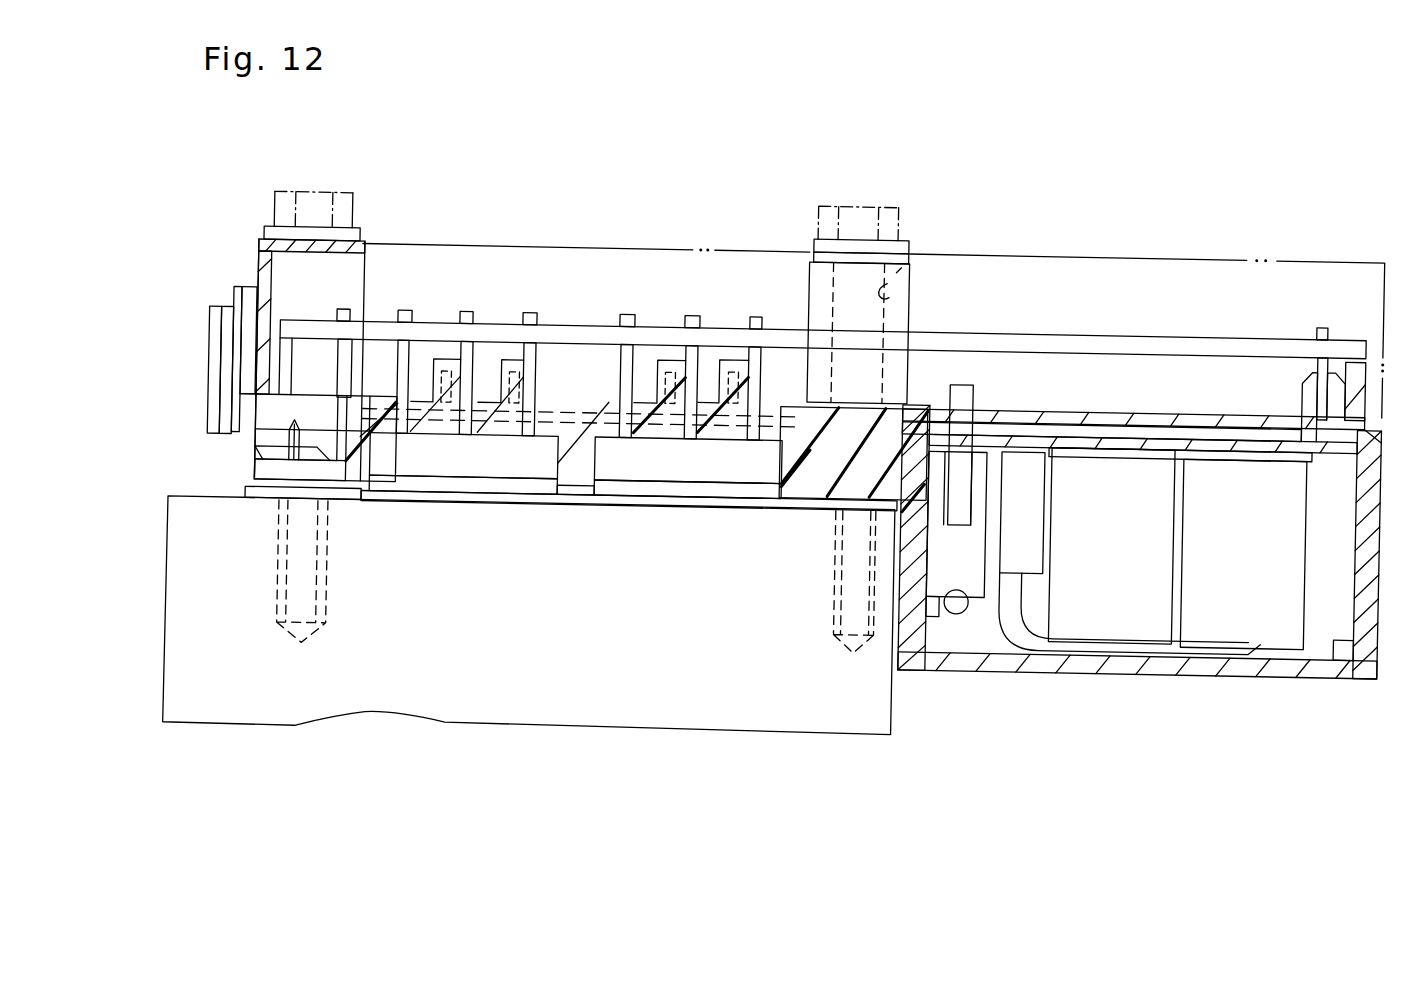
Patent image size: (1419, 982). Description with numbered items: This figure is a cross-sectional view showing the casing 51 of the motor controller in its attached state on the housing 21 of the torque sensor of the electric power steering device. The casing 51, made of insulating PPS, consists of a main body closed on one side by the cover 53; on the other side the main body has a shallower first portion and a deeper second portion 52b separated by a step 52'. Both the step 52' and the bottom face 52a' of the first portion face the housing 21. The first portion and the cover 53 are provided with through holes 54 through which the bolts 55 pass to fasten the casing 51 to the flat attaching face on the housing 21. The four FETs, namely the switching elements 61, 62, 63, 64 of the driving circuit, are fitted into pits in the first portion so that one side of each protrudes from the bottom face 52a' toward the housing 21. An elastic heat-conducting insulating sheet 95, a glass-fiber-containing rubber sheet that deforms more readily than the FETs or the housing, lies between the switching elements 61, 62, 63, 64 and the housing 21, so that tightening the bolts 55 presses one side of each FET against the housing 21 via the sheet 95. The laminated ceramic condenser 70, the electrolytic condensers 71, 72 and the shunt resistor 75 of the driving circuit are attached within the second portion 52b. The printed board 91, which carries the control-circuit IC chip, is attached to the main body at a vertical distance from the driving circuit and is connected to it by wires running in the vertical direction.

The housing 21 is at (577, 690).
The casing 51 is at (258, 246).
The step 52' is at (653, 621).
The bottom face of the first portion 52a' is at (329, 478).
The second portion 52b is at (1303, 670).
The cover 53 is at (545, 244).
The through hole 54 is at (918, 252).
The bolt 55 is at (318, 197).
The switching element 61 is at (498, 462).
The switching element 62 is at (537, 462).
The switching element 63 is at (673, 467).
The switching element 64 is at (731, 472).
The laminated ceramic condenser 70 is at (1012, 575).
The electrolytic condenser 71 is at (1135, 630).
The electrolytic condenser 72 is at (1233, 630).
The shunt resistor 75 is at (957, 615).
The printed board 91 is at (571, 330).
The elastic heat-conducting insulating sheet 95 is at (588, 501).